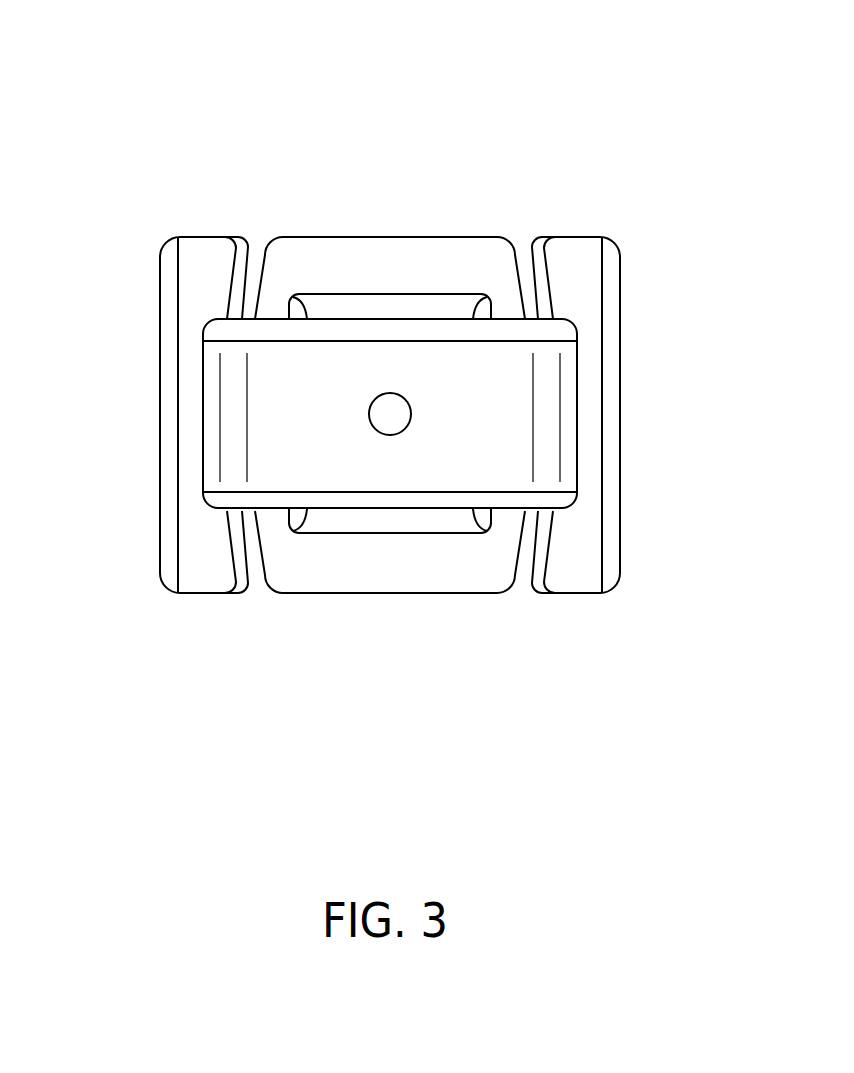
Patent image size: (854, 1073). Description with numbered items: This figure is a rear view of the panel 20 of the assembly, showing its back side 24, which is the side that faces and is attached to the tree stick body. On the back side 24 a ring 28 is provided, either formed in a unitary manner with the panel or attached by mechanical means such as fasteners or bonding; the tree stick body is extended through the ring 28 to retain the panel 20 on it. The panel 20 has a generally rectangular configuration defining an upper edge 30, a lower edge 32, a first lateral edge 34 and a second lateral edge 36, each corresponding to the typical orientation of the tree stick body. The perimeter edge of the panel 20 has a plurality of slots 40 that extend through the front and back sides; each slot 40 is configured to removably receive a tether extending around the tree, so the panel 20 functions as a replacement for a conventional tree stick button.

The panel 20 is at (384, 416).
The back side 24 is at (455, 276).
The ring 28 is at (231, 404).
The upper edge 30 is at (370, 237).
The lower edge 32 is at (370, 593).
The first lateral edge 34 is at (620, 393).
The second lateral edge 36 is at (163, 497).
The slots 40 is at (264, 212).